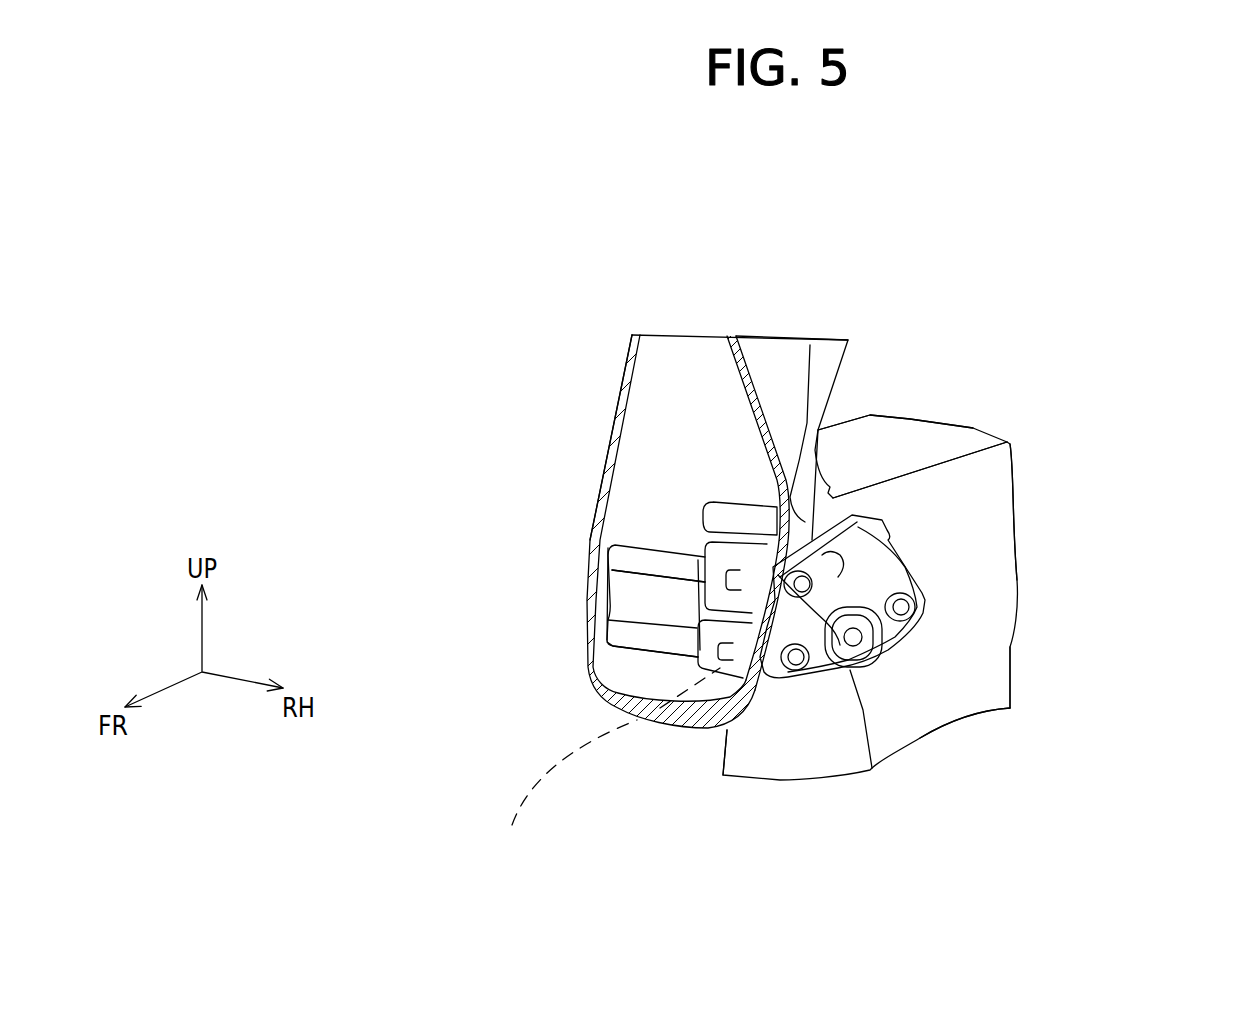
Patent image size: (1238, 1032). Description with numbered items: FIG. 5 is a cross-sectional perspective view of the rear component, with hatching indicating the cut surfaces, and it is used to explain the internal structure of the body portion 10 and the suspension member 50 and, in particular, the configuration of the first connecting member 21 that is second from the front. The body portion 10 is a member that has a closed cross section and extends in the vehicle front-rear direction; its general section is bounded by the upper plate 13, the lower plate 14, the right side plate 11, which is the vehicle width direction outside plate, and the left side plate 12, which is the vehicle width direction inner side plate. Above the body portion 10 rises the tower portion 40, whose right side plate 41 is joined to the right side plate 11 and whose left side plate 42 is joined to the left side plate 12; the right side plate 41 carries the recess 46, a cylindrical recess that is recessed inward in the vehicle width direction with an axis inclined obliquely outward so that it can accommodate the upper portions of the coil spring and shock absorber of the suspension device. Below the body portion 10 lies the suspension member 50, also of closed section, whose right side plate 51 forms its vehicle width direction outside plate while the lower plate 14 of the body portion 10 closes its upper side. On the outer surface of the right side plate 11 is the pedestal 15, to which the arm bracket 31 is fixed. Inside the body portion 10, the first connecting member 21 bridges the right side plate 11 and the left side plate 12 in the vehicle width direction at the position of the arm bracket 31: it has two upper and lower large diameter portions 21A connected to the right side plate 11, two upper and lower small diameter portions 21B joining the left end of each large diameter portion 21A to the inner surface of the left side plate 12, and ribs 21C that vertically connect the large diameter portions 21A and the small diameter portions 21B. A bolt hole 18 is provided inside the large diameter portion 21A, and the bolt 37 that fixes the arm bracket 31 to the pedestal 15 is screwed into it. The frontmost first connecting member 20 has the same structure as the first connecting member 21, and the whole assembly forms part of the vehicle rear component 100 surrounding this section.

The body portion 10 is at (973, 428).
The right side plate 11 is at (755, 690).
The left side plate 12 is at (628, 598).
The upper plate 13 is at (860, 430).
The lower plate 14 is at (693, 730).
The pedestal 15 is at (828, 488).
The bolt hole 18 is at (604, 765).
The first connecting member 20 is at (740, 500).
The first connecting member 21 is at (420, 652).
The large diameter portion 21A is at (600, 694).
The small diameter portion 21B is at (618, 640).
The rib 21C is at (590, 602).
The arm bracket 31 is at (898, 633).
The bolt 37 is at (813, 670).
The tower portion 40 is at (623, 383).
The right side plate 41 is at (818, 361).
The left side plate 42 is at (613, 428).
The recess 46 is at (768, 360).
The suspension member 50 is at (1012, 648).
The right side plate 51 is at (982, 678).
The vehicle 100 is at (1085, 515).